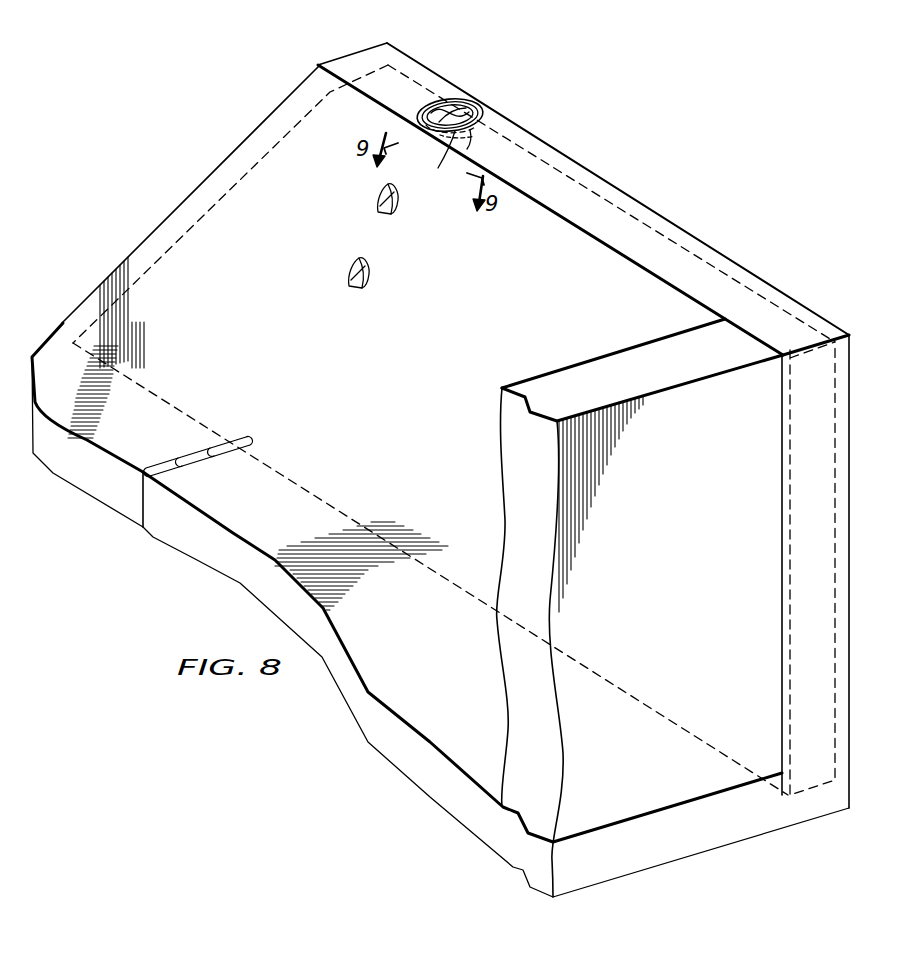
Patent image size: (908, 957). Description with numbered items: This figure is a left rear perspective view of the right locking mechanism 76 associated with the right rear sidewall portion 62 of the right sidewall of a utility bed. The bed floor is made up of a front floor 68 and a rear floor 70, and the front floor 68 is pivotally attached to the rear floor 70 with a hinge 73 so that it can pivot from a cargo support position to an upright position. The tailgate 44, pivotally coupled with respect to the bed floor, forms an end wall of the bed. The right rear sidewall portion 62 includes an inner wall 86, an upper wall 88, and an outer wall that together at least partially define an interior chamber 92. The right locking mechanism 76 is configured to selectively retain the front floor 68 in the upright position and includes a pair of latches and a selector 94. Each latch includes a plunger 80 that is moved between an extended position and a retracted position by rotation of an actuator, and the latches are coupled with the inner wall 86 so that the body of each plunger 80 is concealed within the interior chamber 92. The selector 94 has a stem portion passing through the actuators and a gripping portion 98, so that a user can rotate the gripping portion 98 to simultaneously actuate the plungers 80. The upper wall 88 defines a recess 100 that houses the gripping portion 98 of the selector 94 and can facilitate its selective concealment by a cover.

The tailgate 44 is at (620, 365).
The right rear sidewall portion 62 is at (654, 260).
The front floor 68 is at (62, 365).
The rear floor 70 is at (303, 507).
The hinge 73 is at (168, 457).
The right locking mechanism 76 is at (365, 192).
The plunger 80 is at (376, 200).
The inner wall 86 is at (603, 217).
The upper wall 88 is at (568, 196).
The interior chamber 92 is at (812, 615).
The selector 94 is at (443, 103).
The gripping portion 98 is at (458, 157).
The recess 100 is at (484, 113).